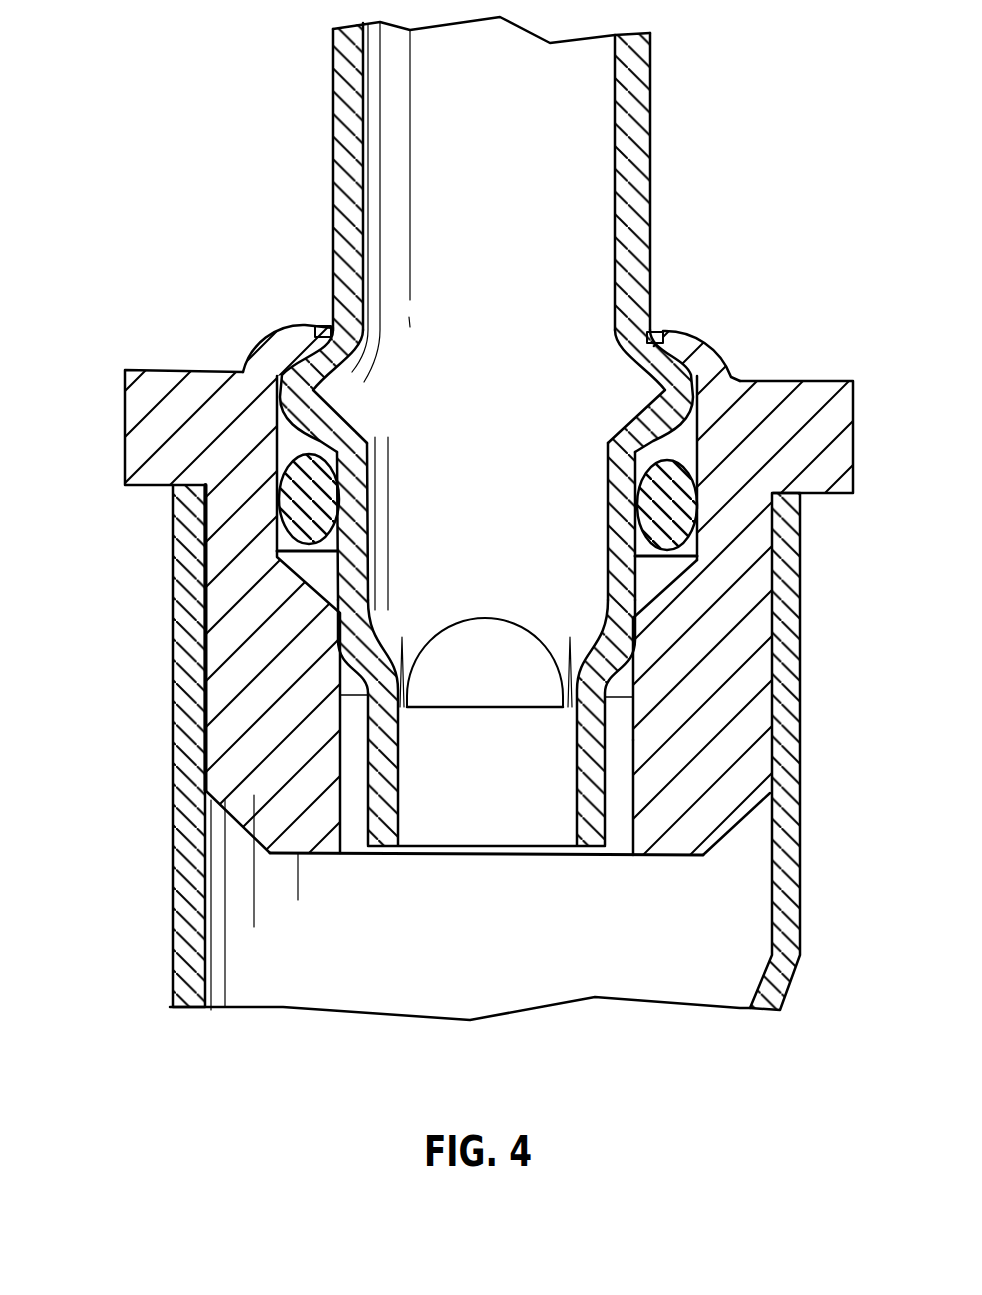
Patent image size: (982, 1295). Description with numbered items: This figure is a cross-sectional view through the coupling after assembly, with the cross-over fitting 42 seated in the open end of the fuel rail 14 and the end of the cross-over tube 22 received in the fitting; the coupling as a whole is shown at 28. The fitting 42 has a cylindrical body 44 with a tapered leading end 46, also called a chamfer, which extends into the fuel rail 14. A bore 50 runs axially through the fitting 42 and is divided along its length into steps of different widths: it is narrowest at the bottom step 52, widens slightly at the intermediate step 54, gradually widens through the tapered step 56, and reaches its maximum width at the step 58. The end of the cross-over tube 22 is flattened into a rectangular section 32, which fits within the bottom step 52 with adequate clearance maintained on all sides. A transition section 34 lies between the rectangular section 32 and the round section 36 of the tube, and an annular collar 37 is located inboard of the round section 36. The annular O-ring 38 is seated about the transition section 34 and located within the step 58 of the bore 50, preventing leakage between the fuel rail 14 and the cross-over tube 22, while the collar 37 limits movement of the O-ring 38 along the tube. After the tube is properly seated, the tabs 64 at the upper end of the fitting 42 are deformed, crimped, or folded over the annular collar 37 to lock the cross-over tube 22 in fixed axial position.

The fuel rail 14 is at (168, 758).
The cross-over tube 22 is at (640, 170).
The closure assembly 28 is at (152, 516).
The rectangular section 32 is at (385, 780).
The transition section 34 is at (608, 520).
The round section 36 is at (290, 440).
The annular collar 37 is at (700, 412).
The O-ring 38 is at (680, 508).
The cross-over fitting 42 is at (748, 371).
The cylindrical body 44 is at (227, 680).
The tapered leading end 46 is at (240, 840).
The bore 50 is at (353, 846).
The bottom step 52 is at (617, 770).
The intermediate step 54 is at (640, 677).
The tapered step 56 is at (657, 590).
The step 58 is at (693, 443).
The tabs 64 is at (298, 322).